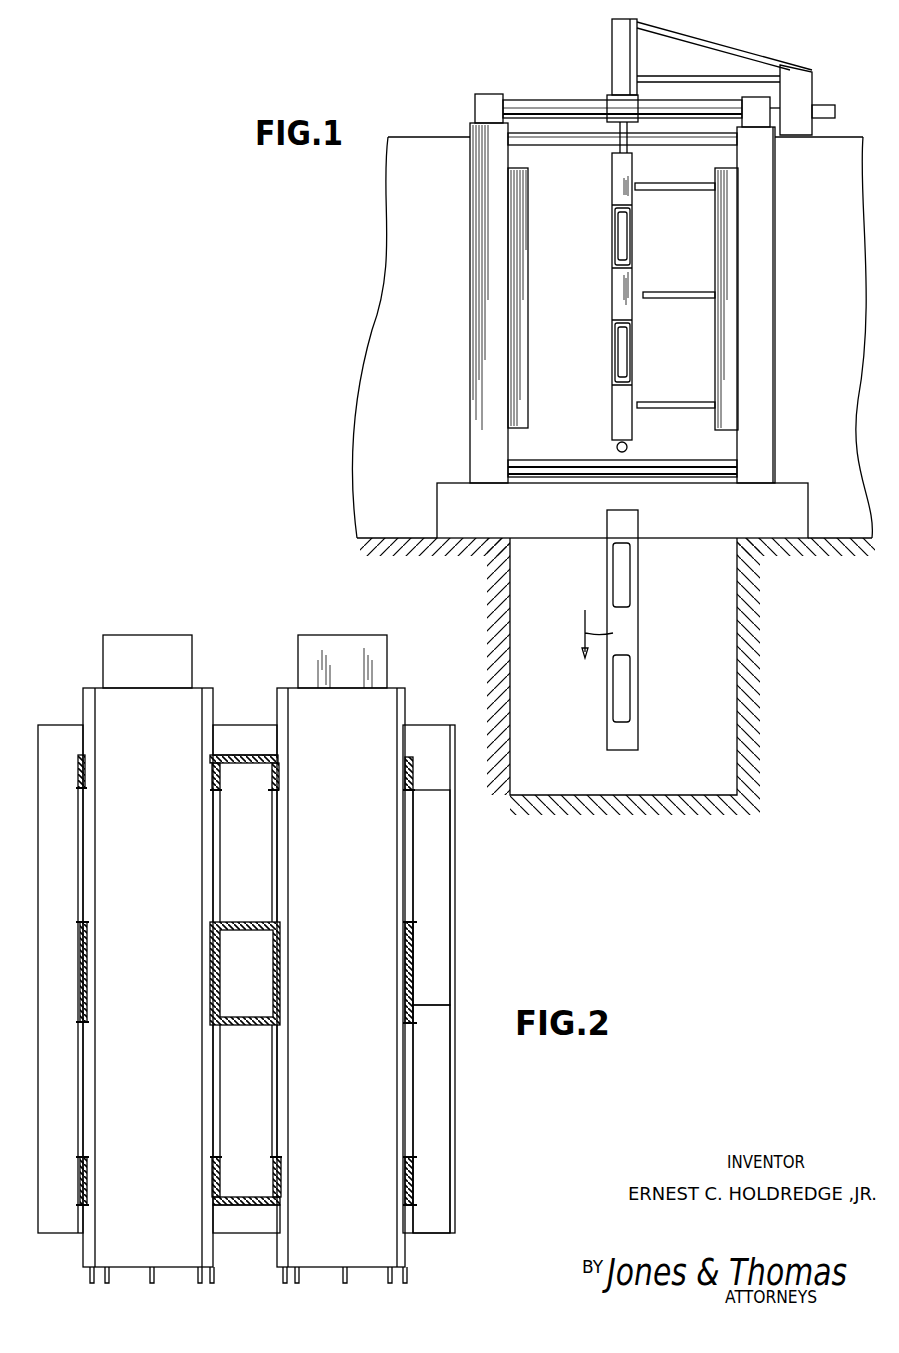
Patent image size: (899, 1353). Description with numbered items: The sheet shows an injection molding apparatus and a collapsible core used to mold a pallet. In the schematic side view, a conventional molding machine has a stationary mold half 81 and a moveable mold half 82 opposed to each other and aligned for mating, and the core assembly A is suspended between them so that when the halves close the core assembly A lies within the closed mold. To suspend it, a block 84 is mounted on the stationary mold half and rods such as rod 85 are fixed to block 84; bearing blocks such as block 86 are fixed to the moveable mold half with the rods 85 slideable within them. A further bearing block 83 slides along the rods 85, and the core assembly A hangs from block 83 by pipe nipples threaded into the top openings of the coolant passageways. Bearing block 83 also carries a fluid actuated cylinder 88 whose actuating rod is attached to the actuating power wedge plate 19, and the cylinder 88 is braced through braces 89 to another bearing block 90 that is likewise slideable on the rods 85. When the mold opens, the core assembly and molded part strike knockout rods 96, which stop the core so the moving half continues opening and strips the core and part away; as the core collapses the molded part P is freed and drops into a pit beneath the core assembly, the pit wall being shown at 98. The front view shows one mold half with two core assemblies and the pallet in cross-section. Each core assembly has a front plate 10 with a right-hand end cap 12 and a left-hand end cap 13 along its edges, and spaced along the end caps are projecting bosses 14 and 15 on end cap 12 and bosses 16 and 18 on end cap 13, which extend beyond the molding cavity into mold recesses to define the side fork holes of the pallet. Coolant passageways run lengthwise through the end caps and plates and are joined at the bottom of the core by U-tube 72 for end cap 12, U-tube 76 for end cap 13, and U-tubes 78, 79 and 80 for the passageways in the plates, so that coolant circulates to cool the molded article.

In FIG. 2, the front plate 10 is at (313, 717).
In FIG. 2, the right-hand end cap 12 is at (402, 720).
In FIG. 2, the left-hand end cap 13 is at (277, 742).
In FIG. 2, the projecting boss 14 is at (412, 862).
In FIG. 2, the projecting boss 15 is at (414, 1082).
In FIG. 2, the projecting boss 16 is at (278, 862).
In FIG. 2, the projecting boss 18 is at (277, 1057).
In FIG. 2, the actuating power wedge plate 19 is at (305, 662).
In FIG. 2, the U-tube 72 is at (407, 1278).
In FIG. 2, the U-tube 76 is at (284, 1280).
In FIG. 2, the U-tube 78 is at (298, 1283).
In FIG. 2, the U-tube 79 is at (345, 1282).
In FIG. 2, the U-tube 80 is at (389, 1283).
In FIG. 1, the stationary mold half 81 is at (520, 195).
In FIG. 1, the moveable mold half 82 is at (718, 345).
In FIG. 1, the bearing block 83 is at (612, 105).
In FIG. 1, the block 84 is at (484, 108).
In FIG. 1, the rod 85 is at (548, 105).
In FIG. 1, the bearing block 86 is at (760, 117).
In FIG. 1, the fluid actuated cylinder 88 is at (612, 37).
In FIG. 1, the brace 89 is at (690, 80).
In FIG. 1, the bearing block 90 is at (800, 100).
In FIG. 1, the knockout rod 96 is at (678, 402).
In FIG. 1, the pit 98 is at (720, 685).
In FIG. 1, the core assembly A is at (612, 305).
In FIG. 1, the molded part P is at (638, 618).